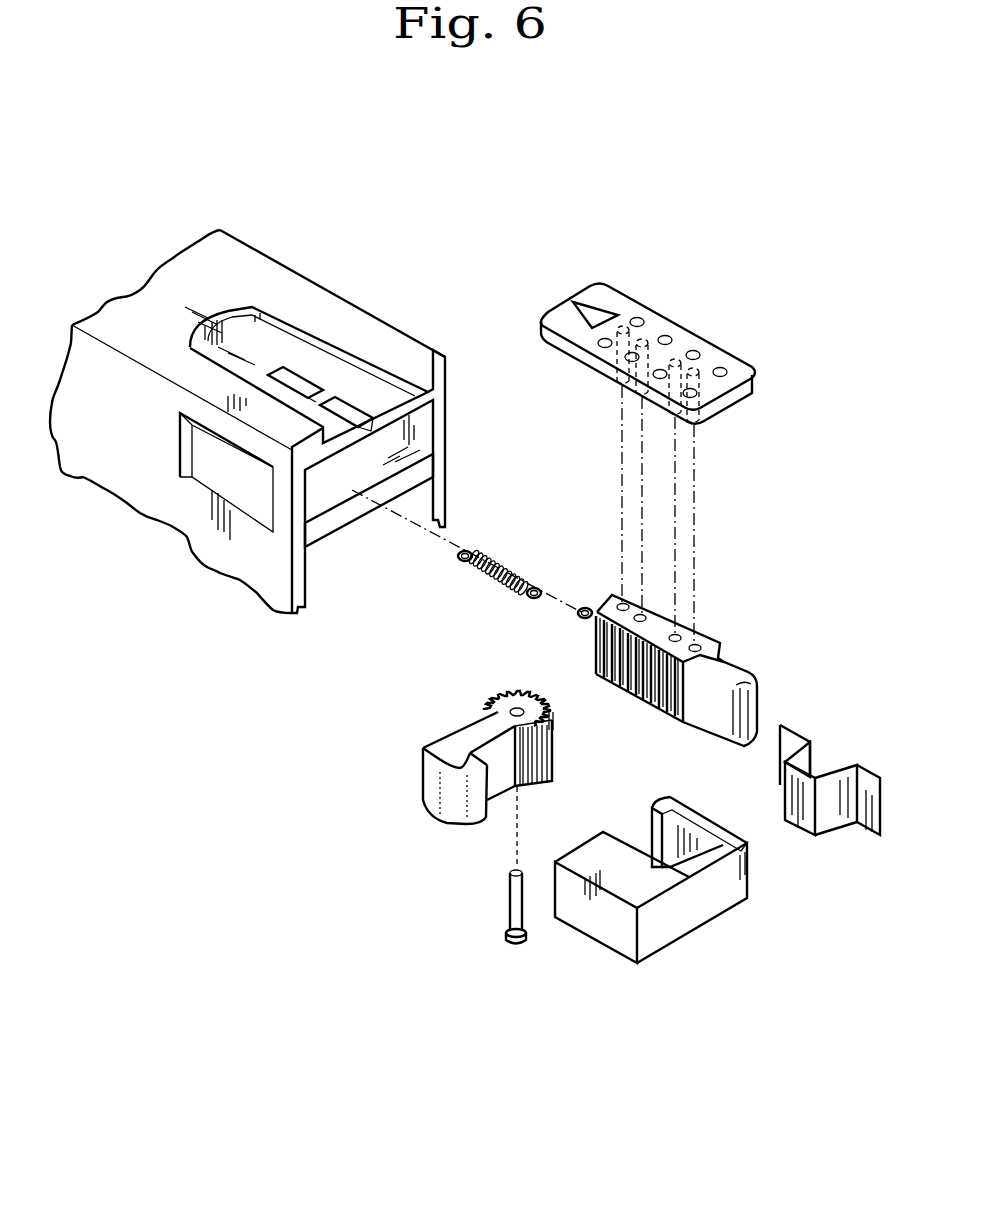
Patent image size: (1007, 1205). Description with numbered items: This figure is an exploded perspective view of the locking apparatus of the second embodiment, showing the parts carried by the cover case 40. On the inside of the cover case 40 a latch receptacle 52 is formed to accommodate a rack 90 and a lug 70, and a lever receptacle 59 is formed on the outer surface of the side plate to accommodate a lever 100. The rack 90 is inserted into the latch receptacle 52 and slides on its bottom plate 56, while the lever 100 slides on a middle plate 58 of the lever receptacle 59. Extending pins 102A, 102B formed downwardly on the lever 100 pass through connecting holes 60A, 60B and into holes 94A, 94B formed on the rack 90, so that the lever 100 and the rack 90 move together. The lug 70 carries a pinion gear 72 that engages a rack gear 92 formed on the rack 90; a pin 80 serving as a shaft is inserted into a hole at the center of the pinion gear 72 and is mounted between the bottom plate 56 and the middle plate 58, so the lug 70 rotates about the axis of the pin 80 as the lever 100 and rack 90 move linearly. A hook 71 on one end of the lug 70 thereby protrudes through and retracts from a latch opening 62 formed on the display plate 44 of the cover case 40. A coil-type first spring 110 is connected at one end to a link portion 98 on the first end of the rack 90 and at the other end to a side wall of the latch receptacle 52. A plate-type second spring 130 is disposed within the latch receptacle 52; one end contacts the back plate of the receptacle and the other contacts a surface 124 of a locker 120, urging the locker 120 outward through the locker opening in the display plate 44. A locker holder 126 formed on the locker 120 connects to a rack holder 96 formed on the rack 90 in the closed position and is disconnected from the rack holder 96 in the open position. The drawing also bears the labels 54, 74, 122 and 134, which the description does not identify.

The cover case 40 is at (290, 431).
The display plate 44 is at (171, 461).
The latch receptacle 52 is at (320, 503).
The housing end wall 54 is at (443, 427).
The bottom plate 56 is at (368, 500).
The middle plate 58 is at (277, 348).
The lever receptacle 59 is at (240, 347).
The connecting hole 60A is at (303, 387).
The connecting hole 60B is at (360, 420).
The latch opening 62 is at (220, 468).
The lug 70 is at (474, 742).
The hook 71 is at (460, 763).
The pinion gear 72 is at (560, 743).
The gear 74 is at (514, 710).
The pin 80 is at (512, 898).
The rack 90 is at (657, 659).
The rack gear 92 is at (661, 700).
The hole 94A is at (622, 608).
The hole 94B is at (677, 637).
The rack holder 96 is at (750, 670).
The link portion 98 is at (573, 615).
The lever 100 is at (658, 435).
The extending pin 102A is at (620, 373).
The extending pin 102B is at (703, 393).
The first spring 110 is at (507, 555).
The locker 120 is at (675, 892).
The bracket base 122 is at (607, 927).
The surface 124 is at (712, 820).
The locker holder 126 is at (653, 832).
The second spring 130 is at (823, 817).
The clip flap 134 is at (810, 823).